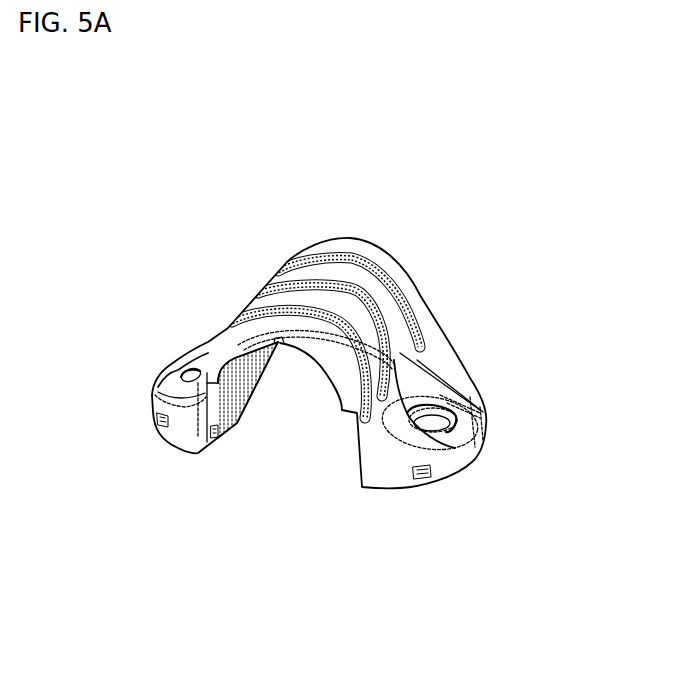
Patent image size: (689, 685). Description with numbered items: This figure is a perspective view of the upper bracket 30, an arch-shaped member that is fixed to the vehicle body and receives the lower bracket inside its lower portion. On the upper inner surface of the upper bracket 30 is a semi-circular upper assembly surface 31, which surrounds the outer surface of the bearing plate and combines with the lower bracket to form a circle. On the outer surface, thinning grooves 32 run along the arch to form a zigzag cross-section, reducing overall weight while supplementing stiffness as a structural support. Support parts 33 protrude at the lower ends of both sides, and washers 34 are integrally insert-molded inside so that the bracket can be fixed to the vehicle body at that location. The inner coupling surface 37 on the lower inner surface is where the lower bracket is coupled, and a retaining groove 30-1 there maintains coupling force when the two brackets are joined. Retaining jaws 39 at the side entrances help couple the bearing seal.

The upper bracket 30 is at (379, 223).
The retaining groove 30-1 is at (230, 430).
The upper assembly surface 31 is at (303, 371).
The thinning grooves 32 is at (313, 262).
The support parts 33 is at (486, 426).
The washers 34 is at (450, 412).
The inner coupling surface 37 is at (252, 405).
The retaining jaws 39 is at (217, 415).